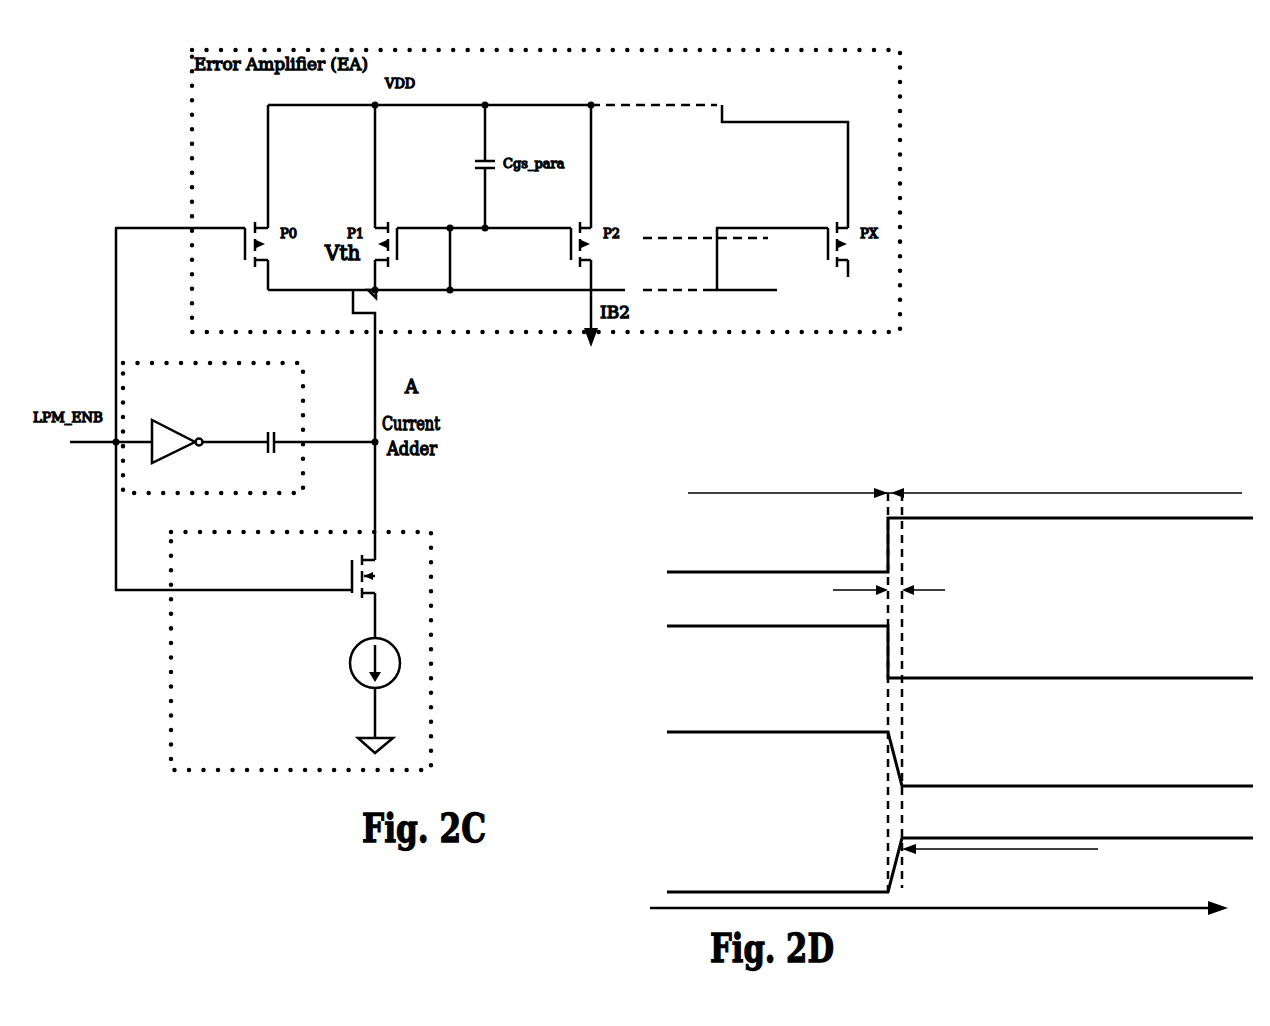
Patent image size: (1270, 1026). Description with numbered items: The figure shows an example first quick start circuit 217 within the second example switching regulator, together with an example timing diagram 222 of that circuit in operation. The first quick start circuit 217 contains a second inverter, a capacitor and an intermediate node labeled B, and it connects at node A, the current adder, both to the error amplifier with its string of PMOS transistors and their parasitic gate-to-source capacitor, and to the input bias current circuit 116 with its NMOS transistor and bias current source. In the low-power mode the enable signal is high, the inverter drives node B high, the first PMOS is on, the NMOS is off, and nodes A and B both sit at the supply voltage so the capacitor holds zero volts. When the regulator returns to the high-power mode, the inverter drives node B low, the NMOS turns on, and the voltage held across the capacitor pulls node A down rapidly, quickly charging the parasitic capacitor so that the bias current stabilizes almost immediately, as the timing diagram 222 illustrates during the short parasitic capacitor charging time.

In FIG. 2C, the first quick start circuit 217 is at (233, 428).
In FIG. 2C, the input bias current circuit 116 is at (301, 651).
In FIG. 2D, the timing diagram 222 is at (1023, 428).